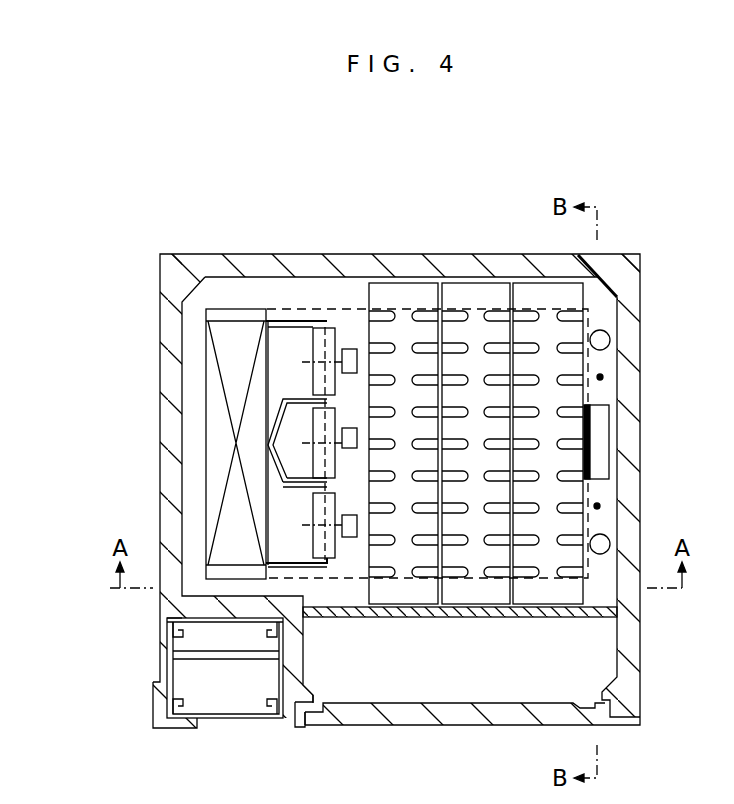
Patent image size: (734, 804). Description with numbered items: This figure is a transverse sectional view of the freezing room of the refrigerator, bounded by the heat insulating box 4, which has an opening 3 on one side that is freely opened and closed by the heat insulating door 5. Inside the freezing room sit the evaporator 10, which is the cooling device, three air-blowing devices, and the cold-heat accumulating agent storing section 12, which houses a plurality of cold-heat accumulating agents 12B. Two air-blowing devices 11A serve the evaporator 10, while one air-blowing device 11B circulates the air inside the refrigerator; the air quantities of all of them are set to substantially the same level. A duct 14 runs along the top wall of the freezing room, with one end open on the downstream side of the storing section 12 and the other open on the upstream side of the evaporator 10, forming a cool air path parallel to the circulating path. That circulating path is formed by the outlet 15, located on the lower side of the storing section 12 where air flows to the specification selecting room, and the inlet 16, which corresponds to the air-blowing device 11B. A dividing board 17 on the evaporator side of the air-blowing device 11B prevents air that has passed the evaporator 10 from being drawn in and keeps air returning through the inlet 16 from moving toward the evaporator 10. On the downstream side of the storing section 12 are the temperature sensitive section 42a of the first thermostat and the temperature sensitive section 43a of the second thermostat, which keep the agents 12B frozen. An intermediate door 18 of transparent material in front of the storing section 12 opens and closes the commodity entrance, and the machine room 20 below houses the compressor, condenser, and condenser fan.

The heat insulating box 4 is at (203, 256).
The duct 14 is at (300, 307).
The air-blowing device 11A is at (349, 348).
The air-blowing device 11B is at (312, 432).
The cold-heat accumulating agent storing section 12 is at (470, 337).
The cold-heat accumulating agent 12B is at (399, 288).
The outlet 15 is at (612, 339).
The temperature sensitive section 43a is at (604, 377).
The temperature sensitive section 42a is at (599, 505).
The evaporator 10 is at (210, 365).
The inlet 16 is at (285, 462).
The dividing board 17 is at (293, 487).
The machine room 20 is at (237, 702).
The opening 3 is at (314, 697).
The heat insulating door 5 is at (458, 722).
The intermediate door 18 is at (505, 618).